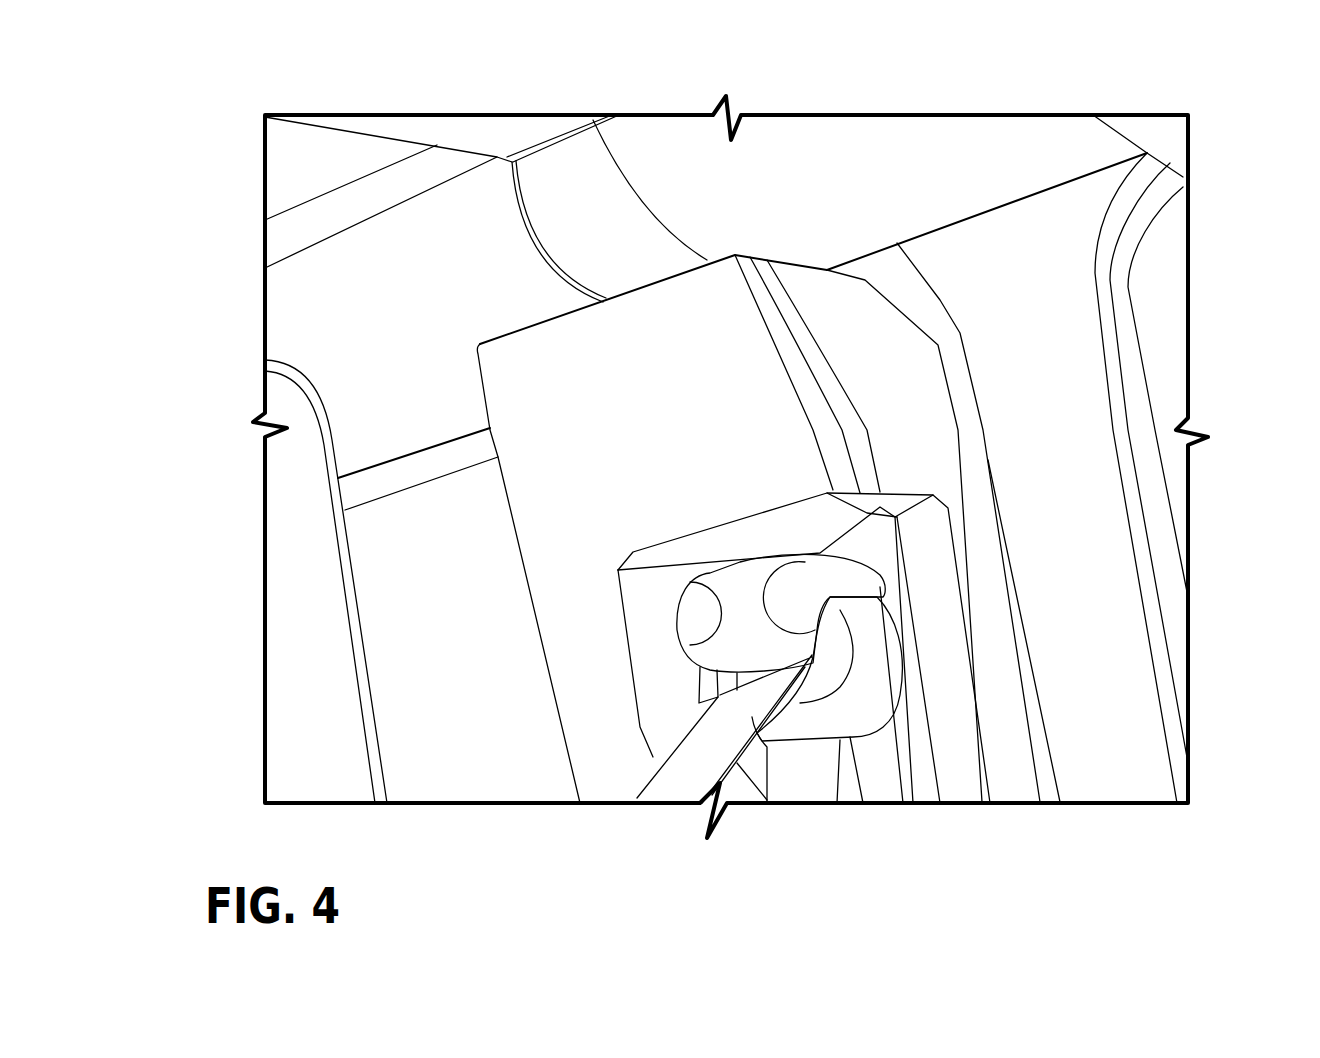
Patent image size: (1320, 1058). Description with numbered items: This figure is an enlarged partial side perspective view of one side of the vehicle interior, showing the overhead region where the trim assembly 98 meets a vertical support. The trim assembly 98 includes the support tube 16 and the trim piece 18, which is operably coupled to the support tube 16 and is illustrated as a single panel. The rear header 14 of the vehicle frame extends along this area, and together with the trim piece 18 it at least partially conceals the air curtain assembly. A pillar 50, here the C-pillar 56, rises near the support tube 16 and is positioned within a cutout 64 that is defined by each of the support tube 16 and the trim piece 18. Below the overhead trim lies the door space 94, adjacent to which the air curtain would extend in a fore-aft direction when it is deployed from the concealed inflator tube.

The rear header 14 is at (443, 137).
The support tube 16 is at (360, 305).
The trim piece 18 is at (805, 163).
The pillar 50 is at (968, 540).
The C-pillar 56 is at (890, 397).
The cutout 64 is at (640, 292).
The door space 94 is at (322, 725).
The trim assembly 98 is at (683, 172).